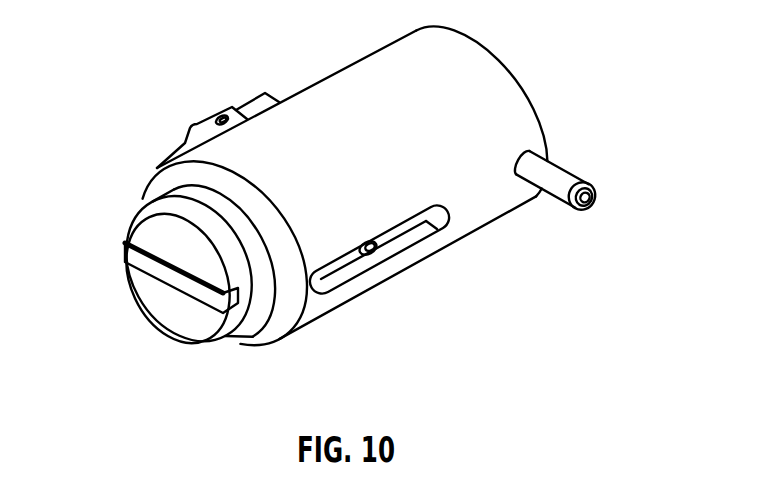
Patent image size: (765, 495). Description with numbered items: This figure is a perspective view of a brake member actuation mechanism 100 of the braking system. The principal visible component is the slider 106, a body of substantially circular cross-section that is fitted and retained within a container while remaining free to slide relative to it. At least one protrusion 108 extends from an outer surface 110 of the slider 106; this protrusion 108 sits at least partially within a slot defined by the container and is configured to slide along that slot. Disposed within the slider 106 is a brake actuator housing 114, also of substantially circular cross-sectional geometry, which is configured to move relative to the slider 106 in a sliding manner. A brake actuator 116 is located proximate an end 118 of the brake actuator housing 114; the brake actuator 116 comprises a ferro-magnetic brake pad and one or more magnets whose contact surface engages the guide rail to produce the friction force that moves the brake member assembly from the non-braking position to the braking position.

The sprayer assembly 100 is at (162, 58).
The slider 106 is at (370, 45).
The protrusion 108 is at (558, 180).
The outer surface 110 is at (328, 92).
The brake actuator housing 114 is at (252, 335).
The brake actuator 116 is at (159, 305).
The end 118 is at (145, 212).